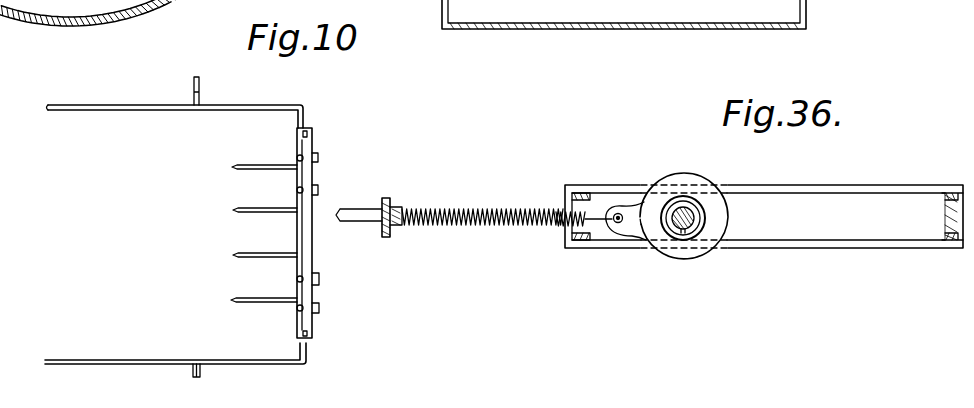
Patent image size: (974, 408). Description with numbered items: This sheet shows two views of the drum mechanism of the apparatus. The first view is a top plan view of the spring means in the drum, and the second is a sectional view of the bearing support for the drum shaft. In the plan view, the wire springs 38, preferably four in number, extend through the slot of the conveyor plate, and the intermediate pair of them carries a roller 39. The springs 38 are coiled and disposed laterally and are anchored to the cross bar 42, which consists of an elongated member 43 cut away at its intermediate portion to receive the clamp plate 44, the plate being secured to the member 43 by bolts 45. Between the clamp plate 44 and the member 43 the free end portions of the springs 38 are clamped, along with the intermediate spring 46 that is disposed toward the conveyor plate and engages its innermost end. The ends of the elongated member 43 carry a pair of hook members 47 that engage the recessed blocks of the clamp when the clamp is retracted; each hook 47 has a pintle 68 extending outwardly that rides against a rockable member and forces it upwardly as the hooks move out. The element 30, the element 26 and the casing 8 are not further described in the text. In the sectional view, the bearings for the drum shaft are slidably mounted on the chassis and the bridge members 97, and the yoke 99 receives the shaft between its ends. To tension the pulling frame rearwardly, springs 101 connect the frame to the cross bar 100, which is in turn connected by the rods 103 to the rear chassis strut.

In FIG. 10, the casing 8 is at (620, 0).
In FIG. 10, the hook member 47 is at (124, 104).
In FIG. 10, the pintle 68 is at (200, 92).
In FIG. 10, the cross bar 42 is at (322, 142).
In FIG. 10, the bolt 45 is at (300, 160).
In FIG. 10, the roller 39 is at (237, 166).
In FIG. 10, the wire spring 38 is at (270, 173).
In FIG. 10, the clamp plate 44 is at (300, 242).
In FIG. 10, the intermediate spring 46 is at (307, 233).
In FIG. 10, the elongated member 43 is at (310, 250).
In FIG. 10, the contact 30 is at (315, 167).
In FIG. 10, the cross bar 100 is at (389, 199).
In FIG. 10, the rod 103 is at (380, 226).
In FIG. 10, the spring 101 is at (478, 209).
In FIG. 36, the bridge member 97 is at (798, 190).
In FIG. 36, the yoke 99 is at (625, 214).
In FIG. 36, the roller disc 26 is at (693, 203).